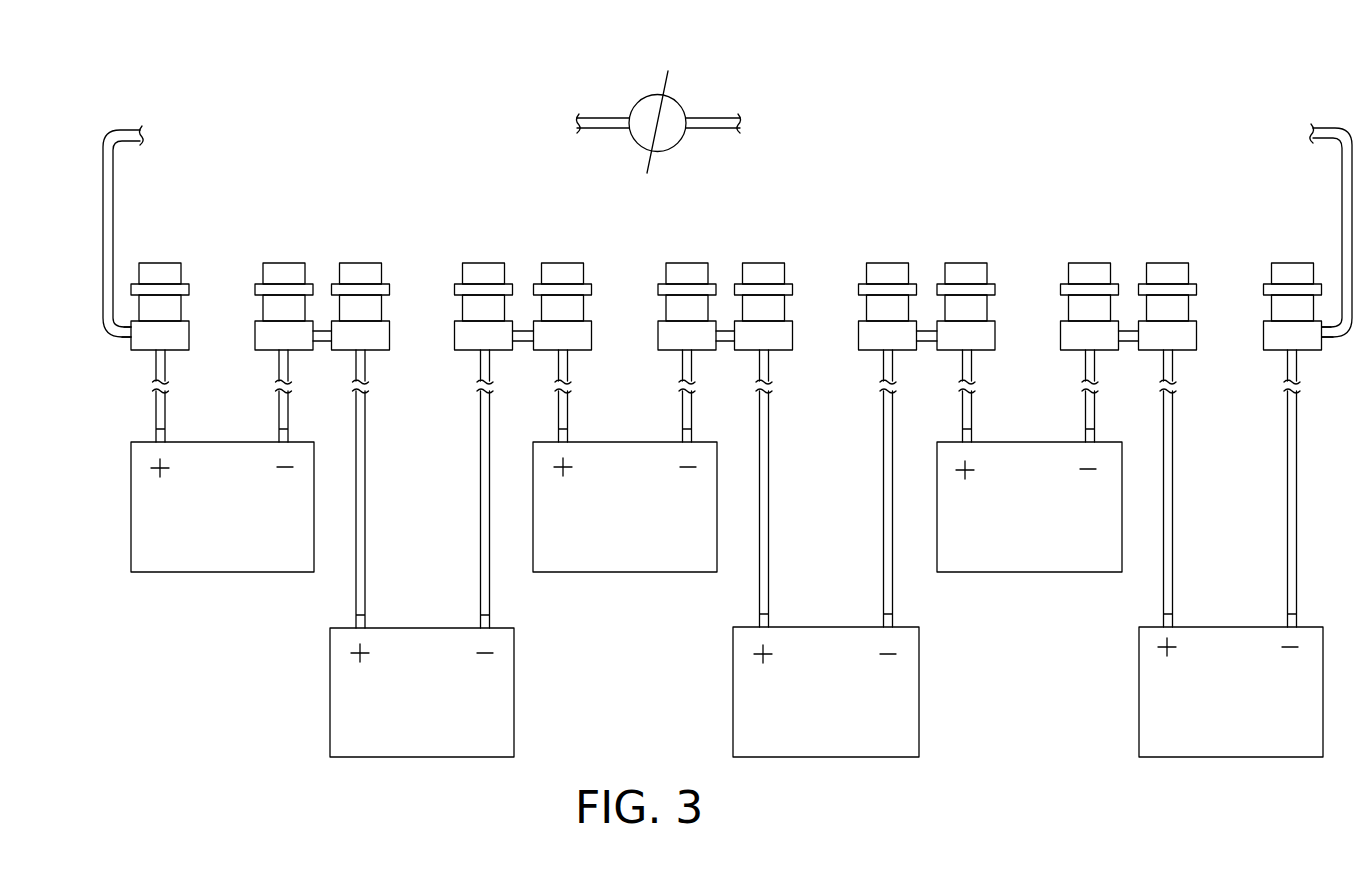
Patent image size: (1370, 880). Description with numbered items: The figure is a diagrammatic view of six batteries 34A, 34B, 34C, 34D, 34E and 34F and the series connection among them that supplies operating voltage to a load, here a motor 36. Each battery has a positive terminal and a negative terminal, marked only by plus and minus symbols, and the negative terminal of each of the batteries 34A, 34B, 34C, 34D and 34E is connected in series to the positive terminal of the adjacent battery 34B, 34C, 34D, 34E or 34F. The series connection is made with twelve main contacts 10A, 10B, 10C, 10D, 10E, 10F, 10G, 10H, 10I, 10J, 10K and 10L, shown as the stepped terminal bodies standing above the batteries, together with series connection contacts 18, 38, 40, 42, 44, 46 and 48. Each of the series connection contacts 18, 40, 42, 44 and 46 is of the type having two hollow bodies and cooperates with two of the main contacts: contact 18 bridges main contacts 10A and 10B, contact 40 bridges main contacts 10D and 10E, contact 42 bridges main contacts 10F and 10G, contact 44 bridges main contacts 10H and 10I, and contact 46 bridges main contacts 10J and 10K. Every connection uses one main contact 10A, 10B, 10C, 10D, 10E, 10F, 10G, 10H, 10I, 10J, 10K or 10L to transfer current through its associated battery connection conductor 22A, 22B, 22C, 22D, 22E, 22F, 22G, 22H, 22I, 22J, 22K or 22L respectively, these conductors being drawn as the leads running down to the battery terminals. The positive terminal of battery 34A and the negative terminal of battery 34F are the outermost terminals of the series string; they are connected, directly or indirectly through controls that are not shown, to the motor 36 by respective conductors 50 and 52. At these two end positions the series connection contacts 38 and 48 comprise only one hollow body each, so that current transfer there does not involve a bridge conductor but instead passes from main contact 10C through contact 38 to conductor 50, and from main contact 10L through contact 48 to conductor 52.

The main contact 10A is at (273, 263).
The main contact 10B is at (352, 263).
The main contact 10C is at (157, 263).
The main contact 10D is at (482, 263).
The main contact 10E is at (562, 263).
The main contact 10F is at (692, 263).
The main contact 10G is at (764, 263).
The main contact 10H is at (884, 263).
The main contact 10I is at (965, 263).
The main contact 10J is at (1088, 263).
The main contact 10K is at (1170, 263).
The main contact 10L is at (1277, 263).
The series connection contact 18 is at (294, 360).
The battery connection conductor 22A is at (277, 418).
The battery connection conductor 22B is at (366, 466).
The battery connection conductor 22C is at (151, 416).
The battery connection conductor 22D is at (478, 558).
The battery connection conductor 22E is at (568, 397).
The battery connection conductor 22F is at (680, 418).
The battery connection conductor 22G is at (770, 512).
The battery connection conductor 22H is at (880, 442).
The battery connection conductor 22I is at (972, 403).
The battery connection conductor 22J is at (1096, 403).
The battery connection conductor 22K is at (1176, 547).
The battery connection conductor 22L is at (1299, 526).
The battery 34A is at (246, 520).
The battery 34B is at (440, 716).
The battery 34C is at (648, 529).
The battery 34D is at (848, 712).
The battery 34E is at (1051, 527).
The battery 34F is at (1246, 712).
The motor 36 is at (678, 103).
The series connection contact 38 is at (138, 353).
The series connection contact 40 is at (602, 351).
The series connection contact 42 is at (781, 360).
The series connection contact 44 is at (988, 358).
The series connection contact 46 is at (1204, 359).
The series connection contact 48 is at (1313, 350).
The conductor 50 is at (102, 162).
The conductor 52 is at (1330, 128).